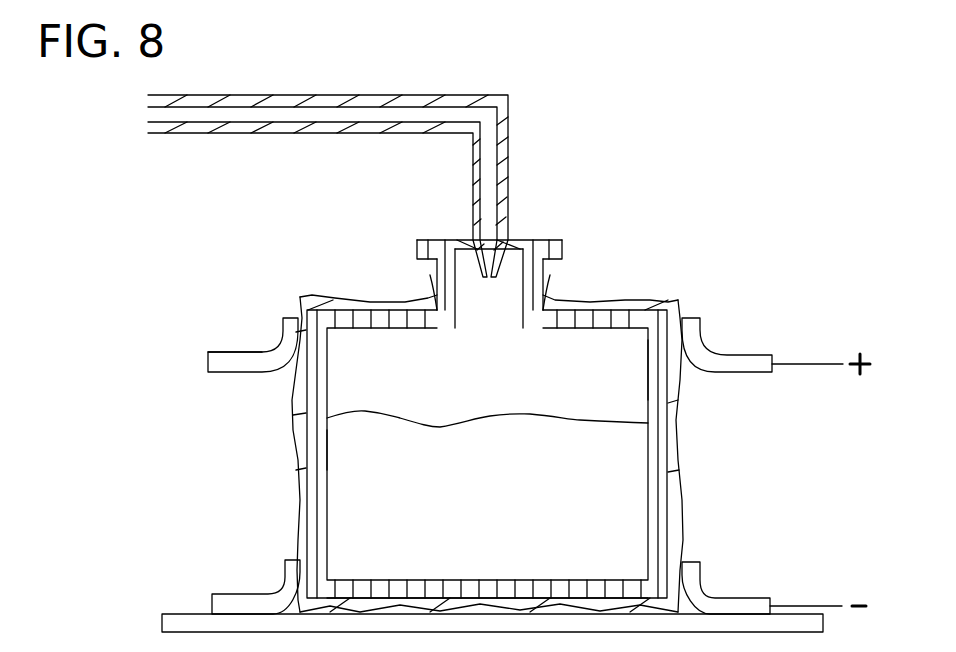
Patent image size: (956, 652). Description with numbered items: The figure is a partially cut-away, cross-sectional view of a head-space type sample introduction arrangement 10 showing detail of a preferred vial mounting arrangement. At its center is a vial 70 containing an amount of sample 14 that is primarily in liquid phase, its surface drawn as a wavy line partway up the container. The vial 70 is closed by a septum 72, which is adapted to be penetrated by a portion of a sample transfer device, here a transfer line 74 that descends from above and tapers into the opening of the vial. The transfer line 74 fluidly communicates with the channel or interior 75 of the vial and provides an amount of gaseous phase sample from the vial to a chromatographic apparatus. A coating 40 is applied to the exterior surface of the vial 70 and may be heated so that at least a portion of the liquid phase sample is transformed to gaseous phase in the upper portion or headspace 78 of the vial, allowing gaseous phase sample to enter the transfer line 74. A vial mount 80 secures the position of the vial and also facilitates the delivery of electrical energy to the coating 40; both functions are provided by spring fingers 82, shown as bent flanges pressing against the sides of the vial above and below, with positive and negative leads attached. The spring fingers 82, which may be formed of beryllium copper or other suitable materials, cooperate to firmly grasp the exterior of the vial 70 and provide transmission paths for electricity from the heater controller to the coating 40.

The electrochemical device 10 is at (812, 192).
The sample 14 is at (502, 498).
The coating 40 is at (678, 488).
The vial 70 is at (706, 262).
The septum 72 is at (513, 240).
The transfer line 74 is at (450, 95).
The channel 75 is at (337, 448).
The headspace 78 is at (553, 372).
The vial mount 80 is at (160, 301).
The spring fingers 82 is at (253, 350).